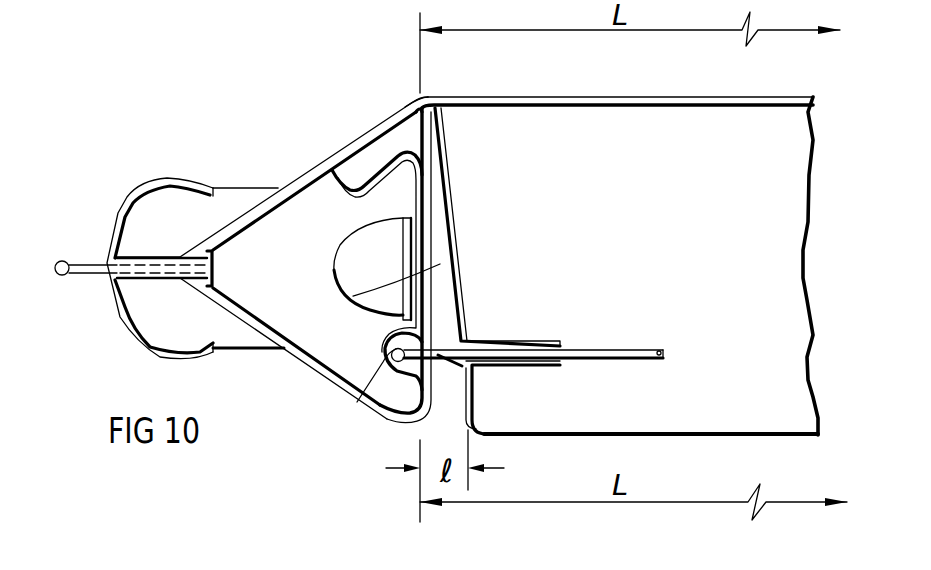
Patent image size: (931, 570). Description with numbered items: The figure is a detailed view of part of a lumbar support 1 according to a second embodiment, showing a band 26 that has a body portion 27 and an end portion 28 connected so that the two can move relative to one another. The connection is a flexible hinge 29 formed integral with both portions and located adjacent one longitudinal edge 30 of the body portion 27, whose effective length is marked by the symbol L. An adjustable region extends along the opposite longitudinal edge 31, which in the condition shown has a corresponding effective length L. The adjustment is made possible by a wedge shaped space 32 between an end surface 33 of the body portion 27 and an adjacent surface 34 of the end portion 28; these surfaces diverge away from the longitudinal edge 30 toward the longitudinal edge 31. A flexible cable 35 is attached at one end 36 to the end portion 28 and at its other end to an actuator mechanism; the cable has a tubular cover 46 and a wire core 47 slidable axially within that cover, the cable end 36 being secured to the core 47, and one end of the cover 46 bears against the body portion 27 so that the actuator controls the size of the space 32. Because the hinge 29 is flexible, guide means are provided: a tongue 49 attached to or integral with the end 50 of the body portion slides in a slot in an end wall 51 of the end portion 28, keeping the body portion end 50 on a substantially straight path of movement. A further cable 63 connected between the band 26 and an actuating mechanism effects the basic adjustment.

The lumbar support 1 is at (368, 432).
The band 26 is at (398, 100).
The body portion 27 is at (698, 132).
The end portion 28 is at (318, 200).
The flexible hinge 29 is at (382, 126).
The longitudinal edge 30 is at (525, 68).
The longitudinal edge 31 is at (688, 436).
The wedge shaped space 32 is at (474, 404).
The end surface 33 is at (413, 322).
The adjacent surface 34 is at (427, 297).
The flexible cable 35 is at (601, 332).
The cable end 36 is at (370, 393).
The tubular cover 46 is at (633, 358).
The wire core 47 is at (472, 378).
The tongue 49 is at (440, 258).
The end of the body portion 50 is at (452, 232).
The end wall 51 is at (353, 296).
The cable 63 is at (84, 244).